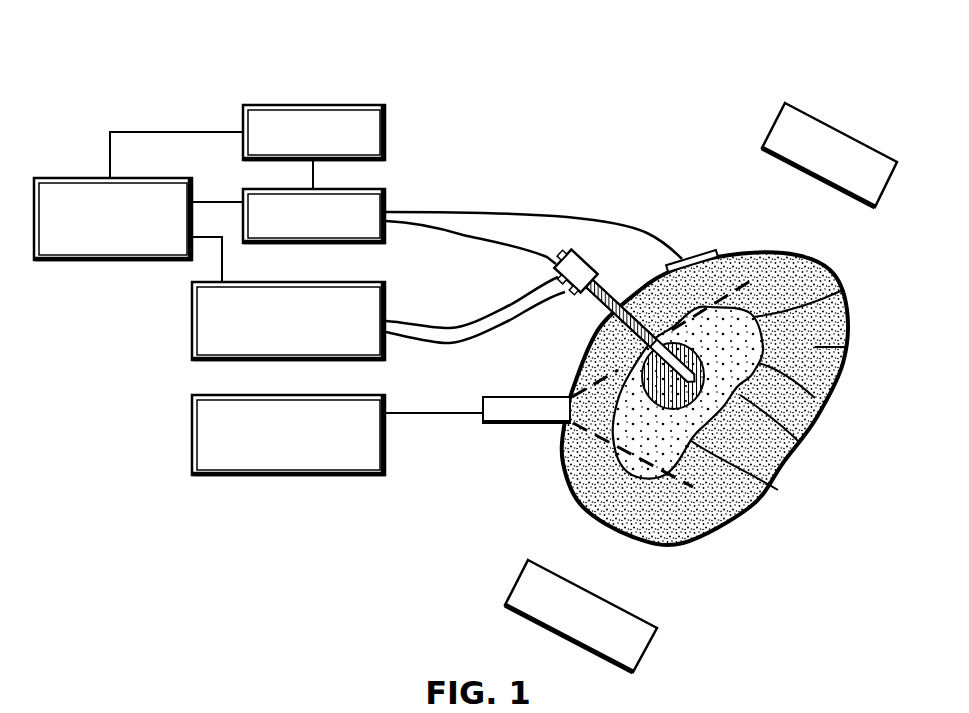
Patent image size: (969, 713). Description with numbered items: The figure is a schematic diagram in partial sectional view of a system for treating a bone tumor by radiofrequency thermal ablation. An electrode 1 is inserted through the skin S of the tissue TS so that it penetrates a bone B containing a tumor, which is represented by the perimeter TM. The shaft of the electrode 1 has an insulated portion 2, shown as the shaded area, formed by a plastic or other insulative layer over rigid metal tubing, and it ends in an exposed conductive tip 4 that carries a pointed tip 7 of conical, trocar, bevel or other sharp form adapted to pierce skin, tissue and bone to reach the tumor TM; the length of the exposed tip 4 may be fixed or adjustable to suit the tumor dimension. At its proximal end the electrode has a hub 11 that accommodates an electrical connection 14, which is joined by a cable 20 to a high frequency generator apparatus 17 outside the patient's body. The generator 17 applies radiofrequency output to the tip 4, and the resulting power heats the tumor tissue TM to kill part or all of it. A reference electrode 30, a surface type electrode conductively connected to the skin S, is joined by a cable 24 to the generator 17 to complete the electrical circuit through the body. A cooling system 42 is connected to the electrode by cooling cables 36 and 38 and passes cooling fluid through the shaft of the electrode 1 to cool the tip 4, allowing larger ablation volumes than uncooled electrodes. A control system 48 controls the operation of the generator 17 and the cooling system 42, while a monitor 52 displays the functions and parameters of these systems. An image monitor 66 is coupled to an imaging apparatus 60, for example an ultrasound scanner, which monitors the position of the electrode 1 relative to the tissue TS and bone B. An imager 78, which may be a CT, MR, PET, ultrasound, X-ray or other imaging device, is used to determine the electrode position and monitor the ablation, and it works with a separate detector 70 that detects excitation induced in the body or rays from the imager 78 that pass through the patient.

The electrode 1 is at (638, 332).
The insulated portion 2 is at (588, 306).
The exposed conductive tip 4 is at (843, 286).
The pointed tip 7 is at (775, 488).
The hub 11 is at (601, 287).
The electrical connection 14 is at (560, 255).
The high frequency generator apparatus 17 is at (358, 188).
The cable 20 is at (414, 226).
The cable 24 is at (648, 224).
The reference electrode 30 is at (702, 252).
The cooling cable 36 is at (516, 303).
The cooling cable 38 is at (503, 326).
The cooling system 42 is at (192, 312).
The control system 48 is at (72, 178).
The monitor 52 is at (315, 104).
The imaging apparatus 60 is at (520, 428).
The image monitor 66 is at (192, 433).
The detector 70 is at (625, 630).
The imager 78 is at (803, 120).
The skin S is at (763, 254).
The tissue TS is at (845, 347).
The bone B is at (815, 398).
The tumor TM is at (798, 441).